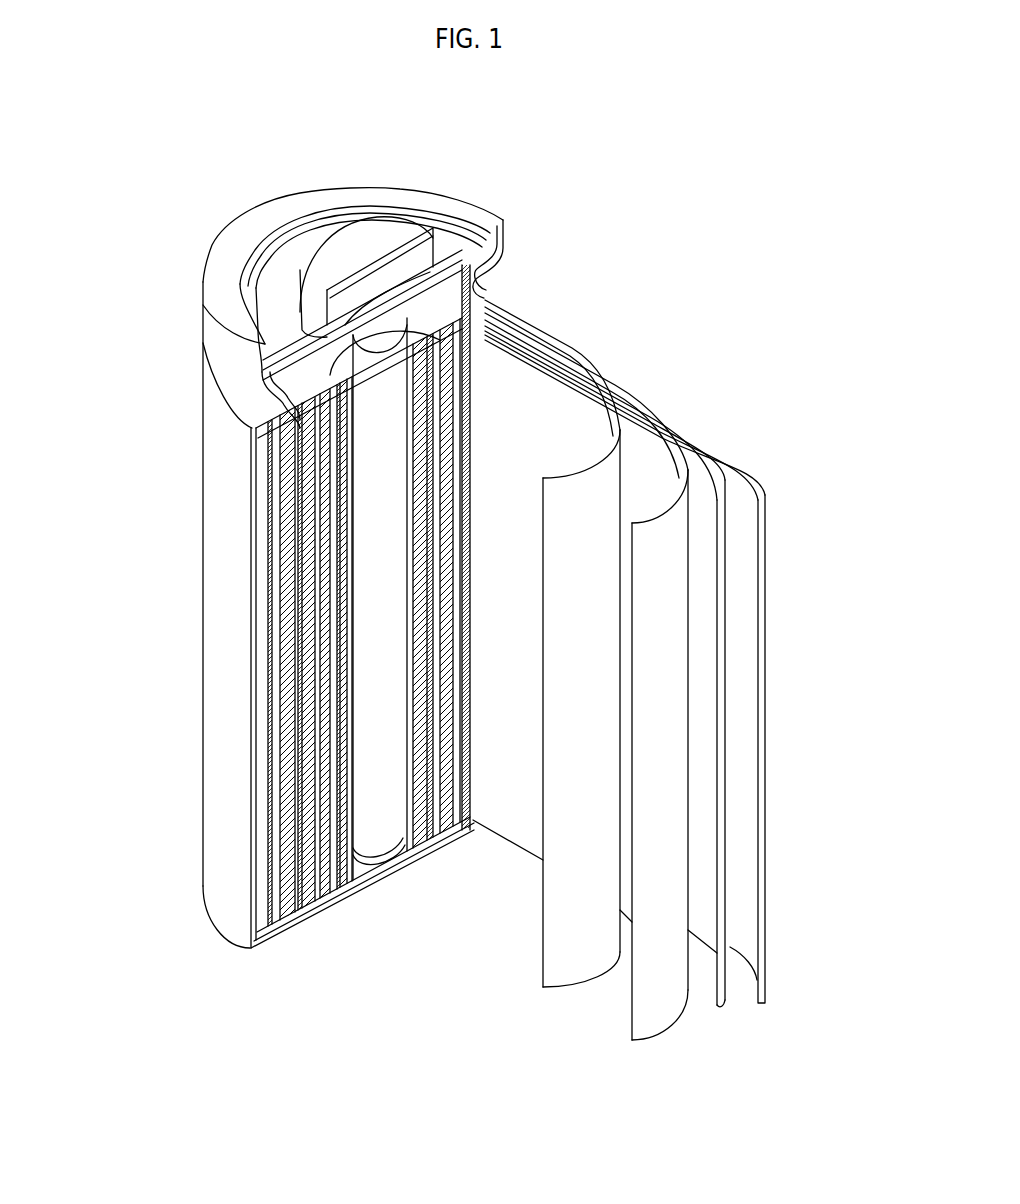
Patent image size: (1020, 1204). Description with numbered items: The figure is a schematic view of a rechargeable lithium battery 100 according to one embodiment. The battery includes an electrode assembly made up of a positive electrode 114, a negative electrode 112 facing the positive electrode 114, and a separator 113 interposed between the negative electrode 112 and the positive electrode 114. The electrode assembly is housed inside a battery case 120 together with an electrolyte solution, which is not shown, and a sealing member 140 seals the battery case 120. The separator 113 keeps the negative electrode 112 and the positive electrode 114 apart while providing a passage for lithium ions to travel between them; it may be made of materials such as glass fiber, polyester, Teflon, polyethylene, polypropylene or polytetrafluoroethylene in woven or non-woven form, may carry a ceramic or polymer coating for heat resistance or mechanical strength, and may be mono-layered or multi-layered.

The rechargeable lithium battery 100 is at (556, 173).
The negative electrode 112 is at (765, 476).
The separator 113 is at (578, 375).
The positive electrode 114 is at (655, 425).
The battery case 120 is at (216, 571).
The sealing member 140 is at (347, 238).